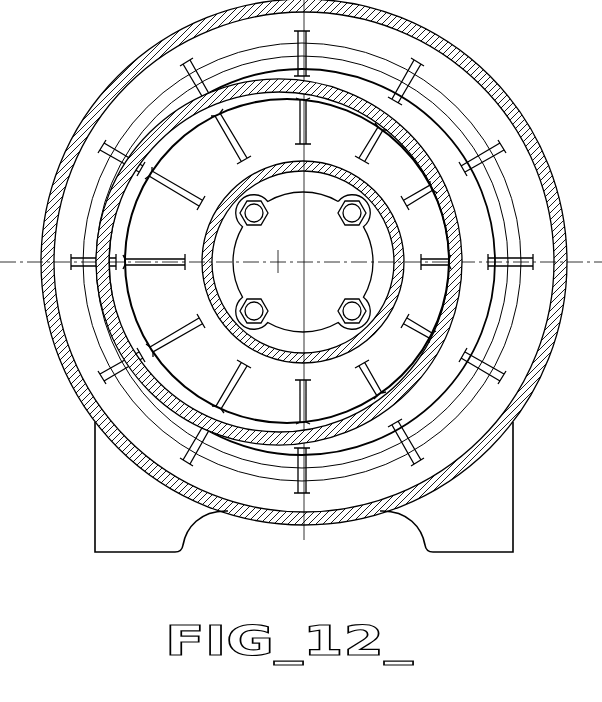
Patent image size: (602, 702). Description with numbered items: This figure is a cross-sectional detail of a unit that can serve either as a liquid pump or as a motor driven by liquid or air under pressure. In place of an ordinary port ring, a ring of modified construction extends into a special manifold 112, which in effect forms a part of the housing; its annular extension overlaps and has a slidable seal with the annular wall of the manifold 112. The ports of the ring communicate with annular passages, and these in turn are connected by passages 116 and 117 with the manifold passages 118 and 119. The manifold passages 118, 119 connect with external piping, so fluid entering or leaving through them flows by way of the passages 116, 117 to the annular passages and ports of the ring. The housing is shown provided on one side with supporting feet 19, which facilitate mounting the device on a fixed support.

The manifold 112 is at (452, 36).
The manifold passage 119 is at (462, 75).
The passage 117 is at (521, 240).
The passage 116 is at (436, 299).
The manifold passage 118 is at (392, 150).
The supporting feet 19 is at (143, 543).